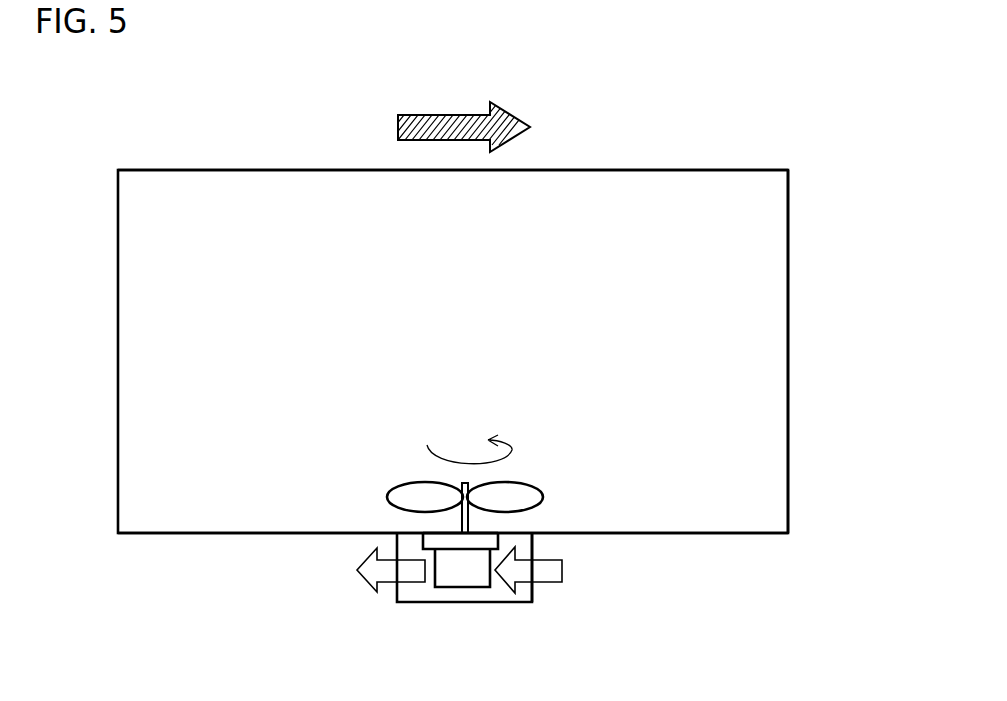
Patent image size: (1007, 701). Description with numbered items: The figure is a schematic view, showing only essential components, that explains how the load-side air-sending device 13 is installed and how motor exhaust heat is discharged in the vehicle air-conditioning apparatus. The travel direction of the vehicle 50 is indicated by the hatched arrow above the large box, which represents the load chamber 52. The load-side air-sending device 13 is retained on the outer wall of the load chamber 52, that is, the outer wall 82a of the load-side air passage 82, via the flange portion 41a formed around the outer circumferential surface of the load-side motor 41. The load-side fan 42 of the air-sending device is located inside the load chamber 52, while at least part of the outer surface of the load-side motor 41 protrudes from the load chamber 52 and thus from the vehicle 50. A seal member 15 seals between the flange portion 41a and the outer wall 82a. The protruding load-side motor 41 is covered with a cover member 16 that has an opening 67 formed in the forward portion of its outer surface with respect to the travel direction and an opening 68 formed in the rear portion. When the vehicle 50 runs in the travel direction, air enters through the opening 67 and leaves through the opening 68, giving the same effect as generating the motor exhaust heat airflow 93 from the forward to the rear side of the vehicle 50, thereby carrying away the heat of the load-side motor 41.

The vehicle 50 is at (177, 141).
The load chamber 52 is at (762, 170).
The load-side air passage 82 is at (747, 237).
The outer wall 82a is at (428, 535).
The seal member 15 is at (500, 535).
The load-side air-sending device 13 is at (668, 122).
The load-side fan 42 is at (432, 493).
The load-side motor 41 is at (462, 563).
The flange portion 41a is at (443, 542).
The cover member 16 is at (487, 602).
The opening 68 is at (395, 590).
The opening 67 is at (532, 592).
The motor exhaust heat airflow 93 is at (550, 572).